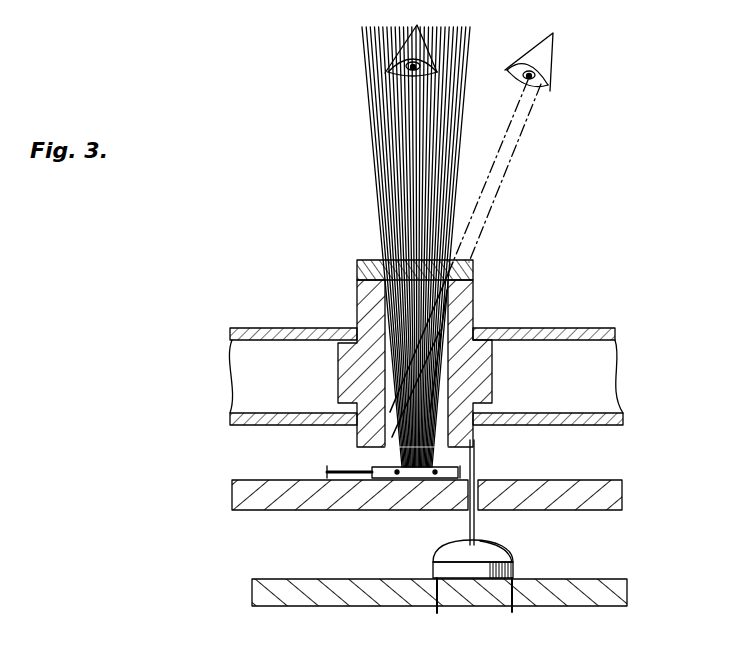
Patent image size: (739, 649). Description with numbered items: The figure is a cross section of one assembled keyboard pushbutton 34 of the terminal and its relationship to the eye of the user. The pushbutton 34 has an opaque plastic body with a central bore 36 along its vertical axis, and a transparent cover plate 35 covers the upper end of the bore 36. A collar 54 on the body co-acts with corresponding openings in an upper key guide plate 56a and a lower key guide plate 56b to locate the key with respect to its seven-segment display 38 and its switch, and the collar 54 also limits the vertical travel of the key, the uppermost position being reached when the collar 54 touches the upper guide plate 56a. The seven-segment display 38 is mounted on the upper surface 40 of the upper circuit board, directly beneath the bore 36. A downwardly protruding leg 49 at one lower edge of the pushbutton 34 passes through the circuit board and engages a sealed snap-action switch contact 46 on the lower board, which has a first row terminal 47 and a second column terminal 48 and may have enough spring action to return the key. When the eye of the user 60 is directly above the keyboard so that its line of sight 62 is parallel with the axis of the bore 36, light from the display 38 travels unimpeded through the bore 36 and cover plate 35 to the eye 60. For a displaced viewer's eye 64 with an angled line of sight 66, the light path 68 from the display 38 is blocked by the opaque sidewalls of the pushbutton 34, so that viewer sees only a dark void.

The pushbutton 34 is at (500, 284).
The transparent cover plate 35 is at (357, 267).
The central bore 36 is at (448, 437).
The 7-segment display 38 is at (372, 470).
The upper surface 40 is at (608, 480).
The snap-action switch contact 46 is at (433, 566).
The first (row) terminal 47 is at (437, 612).
The second (column) terminal 48 is at (514, 610).
The leg 49 is at (476, 528).
The collar 54 is at (338, 356).
The upper key guide plate 56a is at (565, 337).
The lower key guide plate 56b is at (528, 415).
The eye of the user 60 is at (405, 47).
The line of sight 62 is at (410, 143).
The displaced viewer's eye 64 is at (555, 67).
The displaced line of sight 66 is at (490, 174).
The light path 68 is at (447, 377).